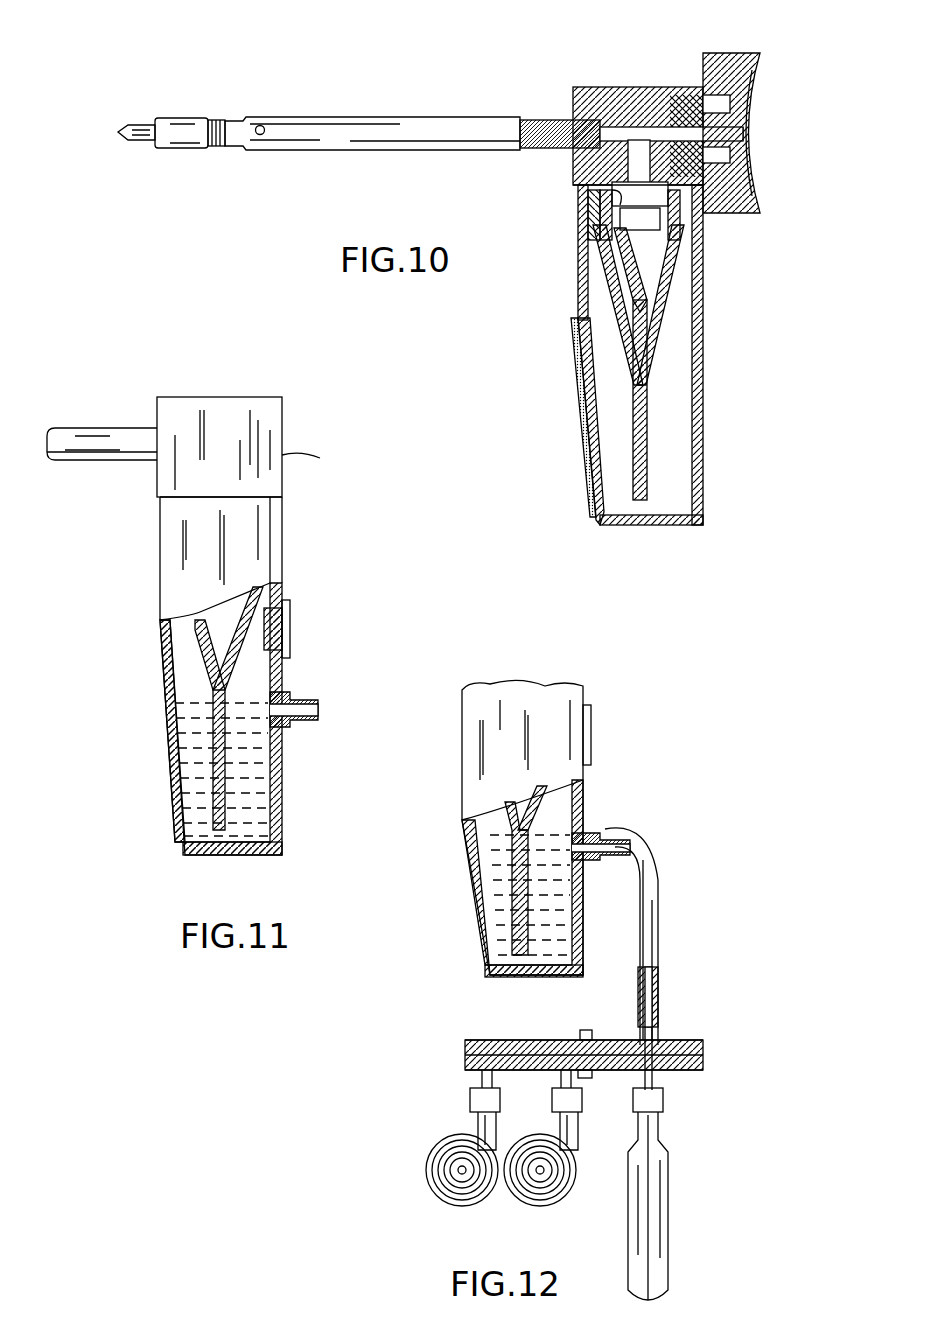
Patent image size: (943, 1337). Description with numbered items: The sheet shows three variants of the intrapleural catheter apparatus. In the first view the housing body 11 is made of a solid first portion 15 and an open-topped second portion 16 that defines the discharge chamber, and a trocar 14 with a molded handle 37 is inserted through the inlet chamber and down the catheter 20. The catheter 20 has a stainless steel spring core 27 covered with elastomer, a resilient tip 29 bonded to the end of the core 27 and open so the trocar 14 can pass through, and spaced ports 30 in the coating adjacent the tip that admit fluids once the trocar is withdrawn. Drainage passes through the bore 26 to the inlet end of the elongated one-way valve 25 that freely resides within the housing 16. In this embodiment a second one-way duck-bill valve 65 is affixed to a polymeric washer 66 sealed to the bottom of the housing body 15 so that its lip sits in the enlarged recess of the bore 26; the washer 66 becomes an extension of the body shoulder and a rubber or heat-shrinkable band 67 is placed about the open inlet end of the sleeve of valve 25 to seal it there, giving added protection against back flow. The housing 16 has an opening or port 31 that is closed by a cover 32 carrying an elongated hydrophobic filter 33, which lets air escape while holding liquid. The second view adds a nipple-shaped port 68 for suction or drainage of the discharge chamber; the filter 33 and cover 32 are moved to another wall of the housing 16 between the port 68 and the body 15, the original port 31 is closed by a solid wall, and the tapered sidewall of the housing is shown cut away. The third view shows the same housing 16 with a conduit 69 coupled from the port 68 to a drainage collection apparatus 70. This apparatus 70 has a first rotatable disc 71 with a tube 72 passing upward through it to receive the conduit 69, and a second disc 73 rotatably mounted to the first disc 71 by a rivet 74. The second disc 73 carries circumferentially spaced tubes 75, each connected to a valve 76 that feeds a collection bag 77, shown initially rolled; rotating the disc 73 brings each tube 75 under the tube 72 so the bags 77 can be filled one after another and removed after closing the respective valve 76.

In FIG. 11, the housing body 11 is at (282, 460).
In FIG. 10, the trocar 14 is at (137, 124).
In FIG. 10, the first portion of housing body 15 is at (625, 86).
In FIG. 11, the first portion of housing body 15 is at (232, 397).
In FIG. 10, the second portion of housing body 16 is at (704, 360).
In FIG. 11, the second portion of housing body 16 is at (282, 548).
In FIG. 12, the second portion of housing body 16 is at (572, 928).
In FIG. 10, the catheter 20 is at (392, 117).
In FIG. 11, the catheter 20 is at (93, 428).
In FIG. 10, the one-way elongated valve 25 is at (648, 410).
In FIG. 12, the one-way elongated valve 25 is at (526, 870).
In FIG. 10, the bore 26 is at (600, 200).
In FIG. 10, the spring core 27 is at (218, 120).
In FIG. 10, the tip 29 is at (182, 118).
In FIG. 10, the ports 30 is at (262, 126).
In FIG. 11, the port 31 is at (165, 650).
In FIG. 10, the cover 32 is at (582, 415).
In FIG. 11, the cover 32 is at (290, 605).
In FIG. 12, the cover 32 is at (591, 732).
In FIG. 10, the hydrophobic filter 33 is at (576, 353).
In FIG. 11, the hydrophobic filter 33 is at (282, 626).
In FIG. 10, the handle 37 is at (745, 56).
In FIG. 10, the second one-way valve 65 is at (650, 268).
In FIG. 10, the washer 66 is at (682, 250).
In FIG. 10, the band 67 is at (578, 228).
In FIG. 11, the port 68 is at (300, 700).
In FIG. 12, the port 68 is at (600, 832).
In FIG. 12, the conduit 69 is at (660, 866).
In FIG. 12, the drainage collection apparatus 70 is at (466, 1040).
In FIG. 12, the first rotatable disc 71 is at (703, 1040).
In FIG. 12, the tube 72 is at (658, 1040).
In FIG. 12, the second disc 73 is at (703, 1066).
In FIG. 12, the rivet 74 is at (583, 1030).
In FIG. 12, the tubes 75 is at (482, 1078).
In FIG. 12, the valve 76 is at (470, 1100).
In FIG. 12, the bags 77 is at (437, 1192).